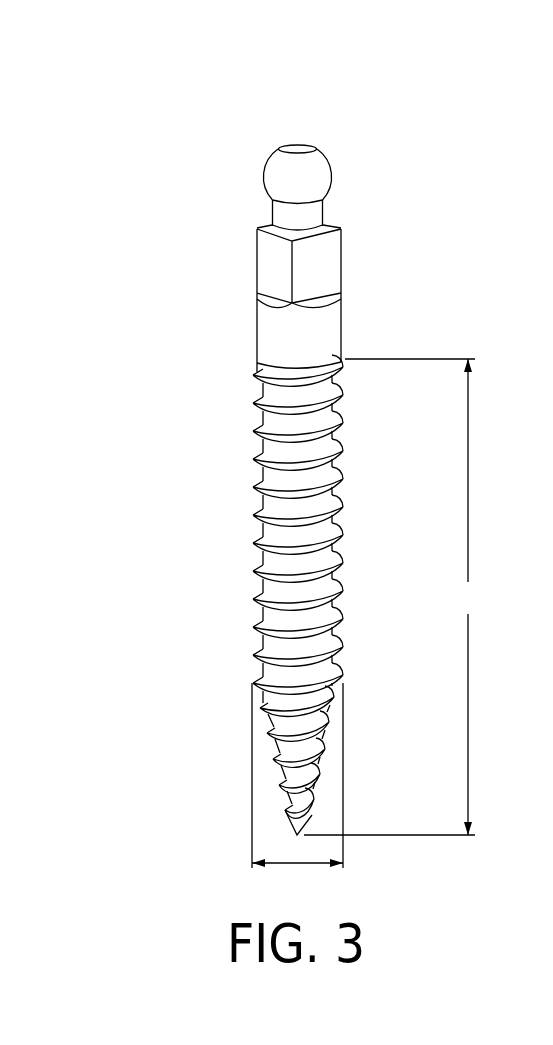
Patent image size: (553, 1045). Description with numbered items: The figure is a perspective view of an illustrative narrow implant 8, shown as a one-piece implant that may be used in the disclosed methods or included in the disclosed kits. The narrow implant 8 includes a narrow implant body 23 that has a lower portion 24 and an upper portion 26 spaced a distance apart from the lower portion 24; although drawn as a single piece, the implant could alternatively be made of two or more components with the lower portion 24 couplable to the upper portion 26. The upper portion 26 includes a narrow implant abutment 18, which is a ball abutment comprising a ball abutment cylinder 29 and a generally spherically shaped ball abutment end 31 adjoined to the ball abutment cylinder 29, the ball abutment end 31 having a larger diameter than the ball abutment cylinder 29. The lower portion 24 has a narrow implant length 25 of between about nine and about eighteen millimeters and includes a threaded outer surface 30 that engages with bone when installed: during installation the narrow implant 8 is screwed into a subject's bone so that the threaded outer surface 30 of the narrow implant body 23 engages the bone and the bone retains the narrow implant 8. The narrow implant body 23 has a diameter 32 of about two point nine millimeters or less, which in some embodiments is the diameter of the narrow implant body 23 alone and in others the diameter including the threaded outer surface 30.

The narrow implant 8 is at (201, 231).
The narrow implant abutment 18 is at (343, 147).
The narrow implant body 23 is at (206, 376).
The lower portion 24 is at (362, 518).
The narrow implant length 25 is at (393, 597).
The upper portion 26 is at (372, 268).
The ball abutment cylinder 29 is at (350, 207).
The threaded outer surface 30 is at (258, 482).
The ball abutment end 31 is at (246, 151).
The diameter 32 is at (298, 865).